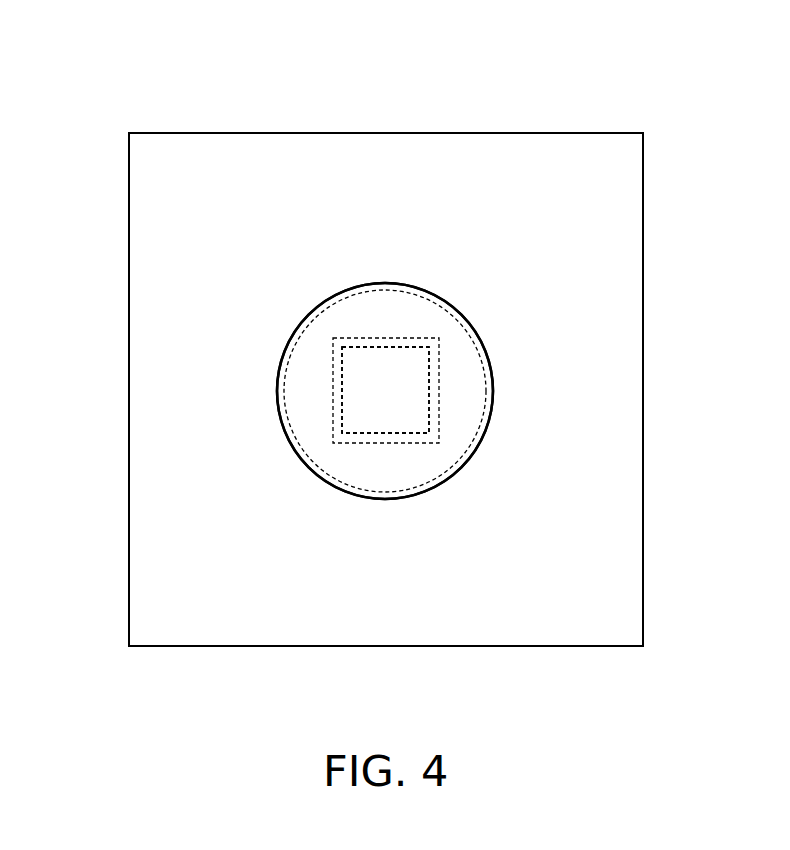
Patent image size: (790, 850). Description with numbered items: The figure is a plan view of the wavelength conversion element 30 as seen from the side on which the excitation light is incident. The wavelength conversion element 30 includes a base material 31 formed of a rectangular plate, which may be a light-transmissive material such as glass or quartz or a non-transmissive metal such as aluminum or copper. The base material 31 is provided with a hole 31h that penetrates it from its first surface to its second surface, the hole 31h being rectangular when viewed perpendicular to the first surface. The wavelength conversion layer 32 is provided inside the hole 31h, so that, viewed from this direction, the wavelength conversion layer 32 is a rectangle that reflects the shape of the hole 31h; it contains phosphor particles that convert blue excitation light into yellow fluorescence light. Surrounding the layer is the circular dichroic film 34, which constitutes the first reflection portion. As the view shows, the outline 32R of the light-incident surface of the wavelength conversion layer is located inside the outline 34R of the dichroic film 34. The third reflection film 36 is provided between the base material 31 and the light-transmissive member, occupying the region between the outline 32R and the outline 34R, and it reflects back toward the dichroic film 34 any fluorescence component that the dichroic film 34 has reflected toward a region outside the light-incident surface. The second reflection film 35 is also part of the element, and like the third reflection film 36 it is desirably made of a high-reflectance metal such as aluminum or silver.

The wavelength conversion element 30 is at (254, 113).
The base material 31 is at (507, 165).
The hole 31h is at (368, 352).
The wavelength conversion layer 32 is at (388, 427).
The outline of the light-incident surface 32R is at (358, 435).
The dichroic film 34 is at (298, 448).
The outline of the dichroic film 34R is at (277, 398).
The second reflection film 35 is at (433, 375).
The third reflection film 36 is at (460, 417).